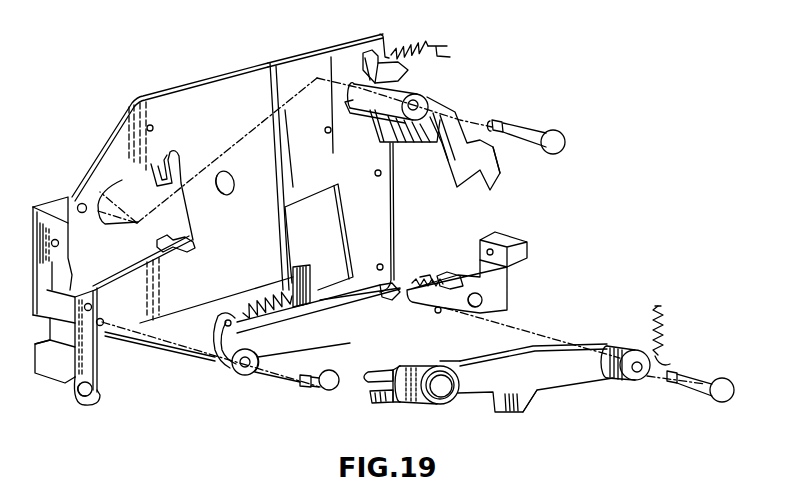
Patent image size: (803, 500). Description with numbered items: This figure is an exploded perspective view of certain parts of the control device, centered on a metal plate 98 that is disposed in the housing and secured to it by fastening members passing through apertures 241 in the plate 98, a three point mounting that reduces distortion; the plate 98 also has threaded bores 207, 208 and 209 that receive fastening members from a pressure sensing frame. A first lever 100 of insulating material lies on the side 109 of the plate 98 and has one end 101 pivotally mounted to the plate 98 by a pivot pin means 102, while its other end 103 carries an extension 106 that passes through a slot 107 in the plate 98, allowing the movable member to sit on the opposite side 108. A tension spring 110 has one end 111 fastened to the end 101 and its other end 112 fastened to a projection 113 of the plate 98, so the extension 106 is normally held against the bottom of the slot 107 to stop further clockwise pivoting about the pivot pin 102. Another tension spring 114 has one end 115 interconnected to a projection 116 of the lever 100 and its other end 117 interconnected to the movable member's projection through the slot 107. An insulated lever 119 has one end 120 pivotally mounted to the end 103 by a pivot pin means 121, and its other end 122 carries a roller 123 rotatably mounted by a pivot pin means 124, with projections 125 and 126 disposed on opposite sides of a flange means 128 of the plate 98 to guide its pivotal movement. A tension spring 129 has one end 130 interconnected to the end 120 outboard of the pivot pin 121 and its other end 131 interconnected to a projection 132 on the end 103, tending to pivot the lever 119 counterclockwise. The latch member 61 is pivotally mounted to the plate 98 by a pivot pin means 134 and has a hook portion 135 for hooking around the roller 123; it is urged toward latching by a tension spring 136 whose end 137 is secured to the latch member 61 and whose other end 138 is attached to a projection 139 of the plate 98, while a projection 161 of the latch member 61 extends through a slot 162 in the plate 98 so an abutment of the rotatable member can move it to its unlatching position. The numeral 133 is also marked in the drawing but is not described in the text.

The metal plate 98 is at (189, 92).
The side of the plate 109 is at (318, 32).
The end of tension spring 137 is at (383, 33).
The tension spring 136 is at (413, 40).
The other end of tension spring 138 is at (450, 57).
The projection of the latch member 161 is at (407, 68).
The pivot pin means 134 is at (530, 130).
The slot in the plate 162 is at (122, 180).
The projection of the plate 139 is at (175, 152).
The threaded bore 208 is at (378, 171).
The latch member 61 is at (450, 155).
The hook portion 135 is at (477, 184).
The threaded bore 207 is at (50, 244).
The slot in the plate 107 is at (336, 222).
The projection of the plate 113 is at (178, 247).
The tension spring 110 is at (247, 290).
The end of tension spring 111 is at (237, 315).
The other end of tension spring 112 is at (311, 270).
The end of tension spring 115 is at (381, 264).
The tension spring 114 is at (427, 276).
The other end of tension spring 117 is at (441, 272).
The extension 106 is at (448, 275).
The projection 132 is at (520, 250).
The other end of the lever 103 is at (497, 298).
The threaded bore 209 is at (372, 300).
The projection of the lever 116 is at (387, 300).
The flange means 128 is at (90, 343).
The end of the lever 101 is at (222, 367).
The pivot pin means 102 is at (320, 397).
The first lever 100 is at (349, 345).
The projection 126 is at (378, 362).
The roller 123 is at (425, 365).
The end of the lever 120 is at (600, 350).
The other end of tension spring 131 is at (661, 307).
The tension spring 129 is at (663, 332).
The end of tension spring 130 is at (662, 353).
The pivot pin means 121 is at (702, 377).
The apertures in the plate 241 is at (72, 398).
The projection 125 is at (380, 404).
The other end of the lever 122 is at (403, 404).
The pivot pin means 124 is at (455, 400).
The insulated lever 119 is at (552, 373).
The notch 133 is at (520, 413).
The side of the plate 108 is at (274, 495).